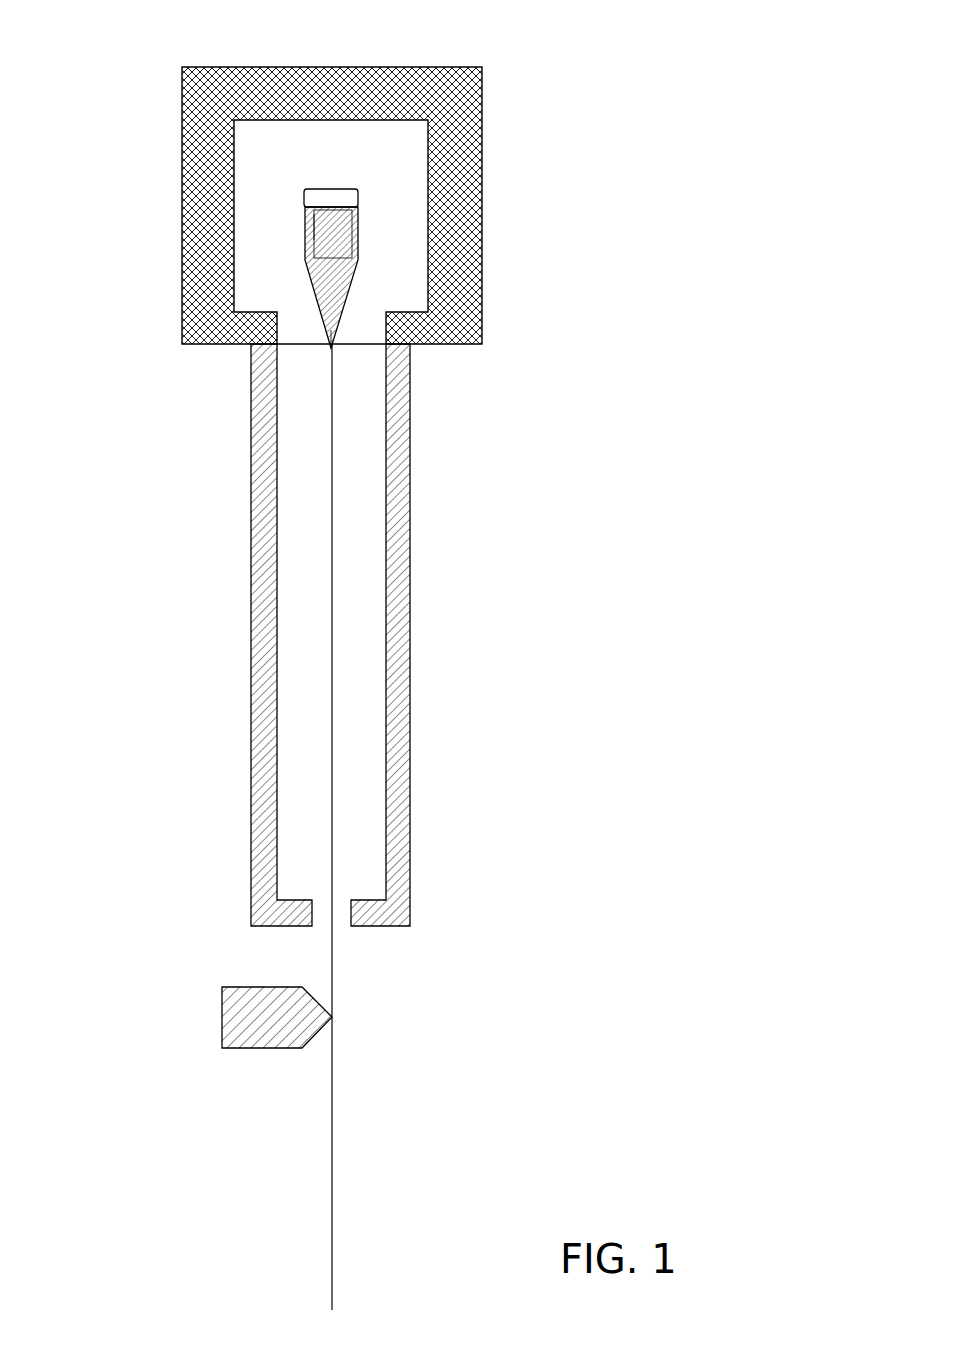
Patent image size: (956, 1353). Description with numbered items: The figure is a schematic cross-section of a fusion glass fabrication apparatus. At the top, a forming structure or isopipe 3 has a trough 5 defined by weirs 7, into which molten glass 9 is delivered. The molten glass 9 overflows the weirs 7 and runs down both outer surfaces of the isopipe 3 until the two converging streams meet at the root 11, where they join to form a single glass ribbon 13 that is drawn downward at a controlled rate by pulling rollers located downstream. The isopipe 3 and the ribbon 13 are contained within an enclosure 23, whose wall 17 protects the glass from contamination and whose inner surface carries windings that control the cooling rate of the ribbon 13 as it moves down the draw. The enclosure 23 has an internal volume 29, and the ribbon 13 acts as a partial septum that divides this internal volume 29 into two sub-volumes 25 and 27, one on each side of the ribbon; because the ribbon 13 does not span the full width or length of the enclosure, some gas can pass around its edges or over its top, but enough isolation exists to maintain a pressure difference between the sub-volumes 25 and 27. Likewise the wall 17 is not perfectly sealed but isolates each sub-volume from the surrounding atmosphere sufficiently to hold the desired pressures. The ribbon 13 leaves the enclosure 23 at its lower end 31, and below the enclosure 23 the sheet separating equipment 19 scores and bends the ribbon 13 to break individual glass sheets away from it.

The forming structure (isopipe) 3 is at (335, 265).
The trough 5 is at (329, 232).
The weirs 7 is at (313, 223).
The molten glass 9 is at (327, 220).
The root 11 is at (330, 313).
The ribbon 13 is at (330, 600).
The wall 17 is at (398, 695).
The sheet separating equipment 19 is at (258, 1028).
The enclosure 23 is at (172, 742).
The sub-volume 25 is at (318, 879).
The sub-volume 27 is at (373, 879).
The internal volume 29 is at (291, 444).
The outlet 31 is at (343, 950).